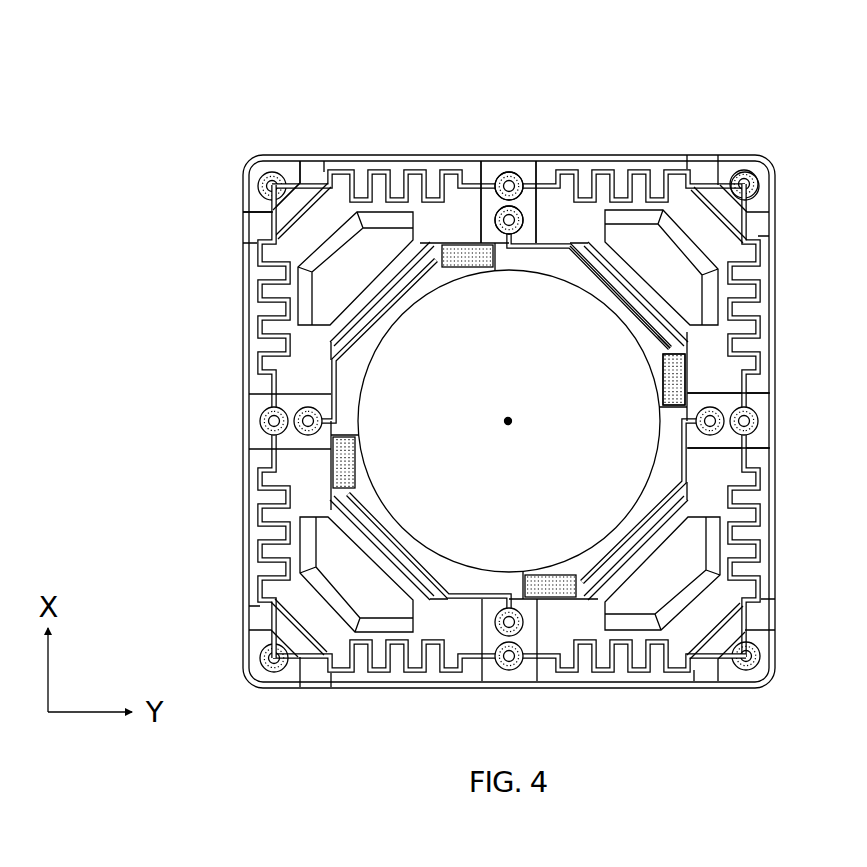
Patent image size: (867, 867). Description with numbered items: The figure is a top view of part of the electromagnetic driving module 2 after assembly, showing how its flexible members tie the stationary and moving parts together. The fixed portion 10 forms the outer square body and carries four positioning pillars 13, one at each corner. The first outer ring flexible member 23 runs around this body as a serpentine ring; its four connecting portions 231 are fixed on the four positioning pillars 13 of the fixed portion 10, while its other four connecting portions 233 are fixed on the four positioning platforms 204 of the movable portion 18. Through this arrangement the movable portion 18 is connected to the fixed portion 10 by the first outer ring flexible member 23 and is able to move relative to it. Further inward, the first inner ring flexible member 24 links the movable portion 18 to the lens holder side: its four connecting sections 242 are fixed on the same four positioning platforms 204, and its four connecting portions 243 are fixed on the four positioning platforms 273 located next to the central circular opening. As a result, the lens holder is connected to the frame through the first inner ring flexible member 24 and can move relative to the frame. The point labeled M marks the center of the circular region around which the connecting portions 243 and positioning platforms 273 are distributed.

The electromagnetic driving module 2 is at (156, 84).
The fixed portion 10 is at (238, 194).
The positioning pillars 13 is at (768, 196).
The movable portion 18 is at (236, 546).
The first outer ring flexible member 23 is at (309, 180).
The positioning platforms 204 is at (492, 172).
The connecting portions 233 is at (505, 172).
The connecting sections 242 is at (519, 212).
The connecting portions 231 is at (745, 172).
The first inner ring flexible member 24 is at (612, 302).
The positioning platforms 273 is at (655, 358).
The connecting portions 243 is at (660, 393).
The center point M is at (504, 421).